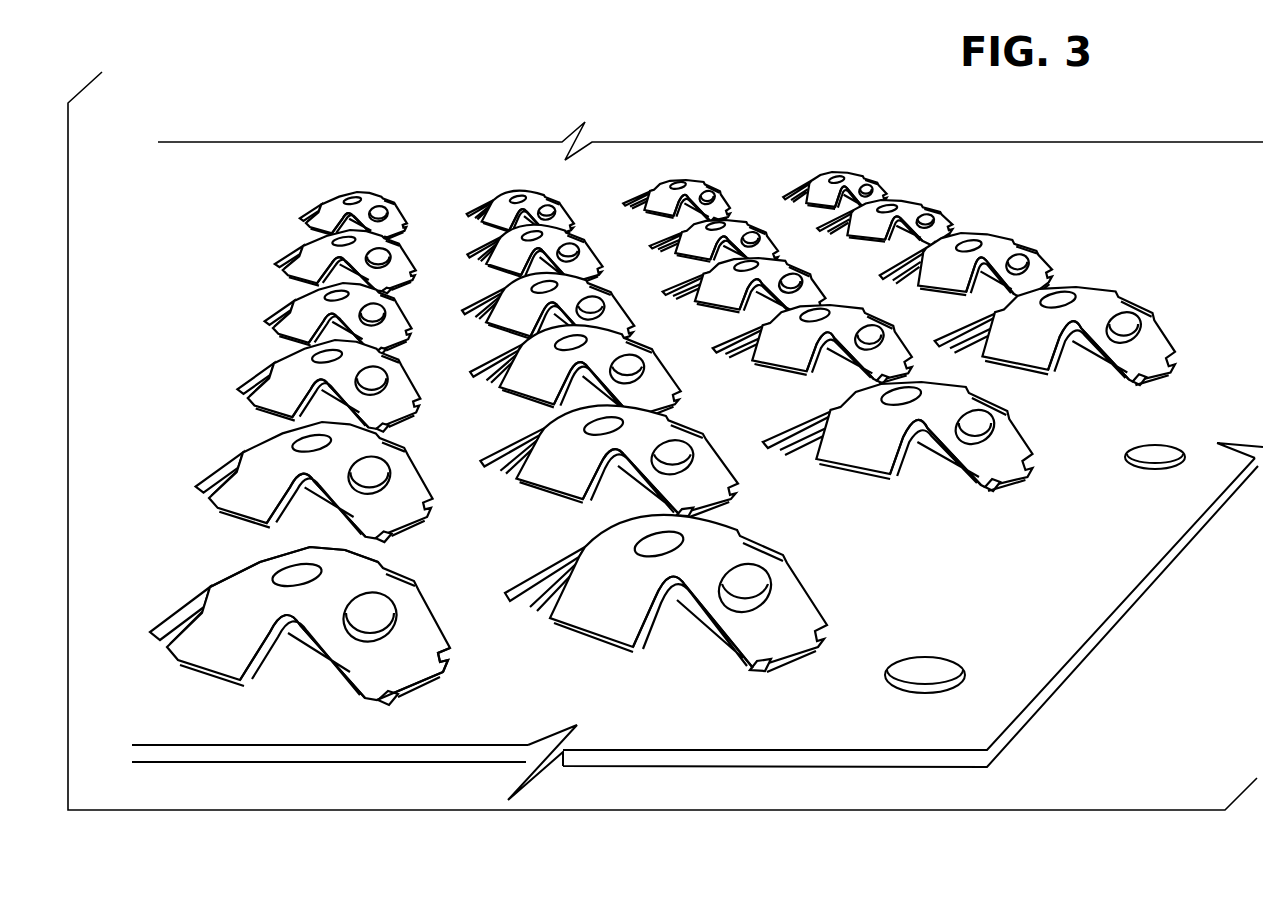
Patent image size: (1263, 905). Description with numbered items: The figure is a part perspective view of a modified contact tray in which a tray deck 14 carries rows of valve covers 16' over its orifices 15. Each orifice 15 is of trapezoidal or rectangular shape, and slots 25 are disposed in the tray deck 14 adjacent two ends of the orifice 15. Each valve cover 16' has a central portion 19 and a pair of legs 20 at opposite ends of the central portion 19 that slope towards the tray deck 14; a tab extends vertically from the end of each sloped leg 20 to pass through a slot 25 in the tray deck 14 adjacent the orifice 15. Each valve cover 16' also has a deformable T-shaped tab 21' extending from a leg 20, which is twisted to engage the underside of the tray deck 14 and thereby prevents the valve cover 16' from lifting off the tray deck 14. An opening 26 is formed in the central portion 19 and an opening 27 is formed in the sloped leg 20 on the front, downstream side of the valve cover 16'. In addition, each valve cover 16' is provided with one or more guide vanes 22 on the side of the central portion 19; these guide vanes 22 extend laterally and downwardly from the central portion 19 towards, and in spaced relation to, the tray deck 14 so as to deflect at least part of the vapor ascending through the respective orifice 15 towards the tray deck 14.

The tray deck 14 is at (703, 158).
The orifice 15 is at (300, 516).
The valve cover 16' is at (590, 527).
The central portion 19 is at (348, 563).
The leg 20 is at (165, 618).
The deformable T-shaped tab 21' is at (615, 692).
The guide vane 22 is at (415, 580).
The slot 25 is at (438, 666).
The opening 26 is at (296, 585).
The opening 27 is at (390, 623).